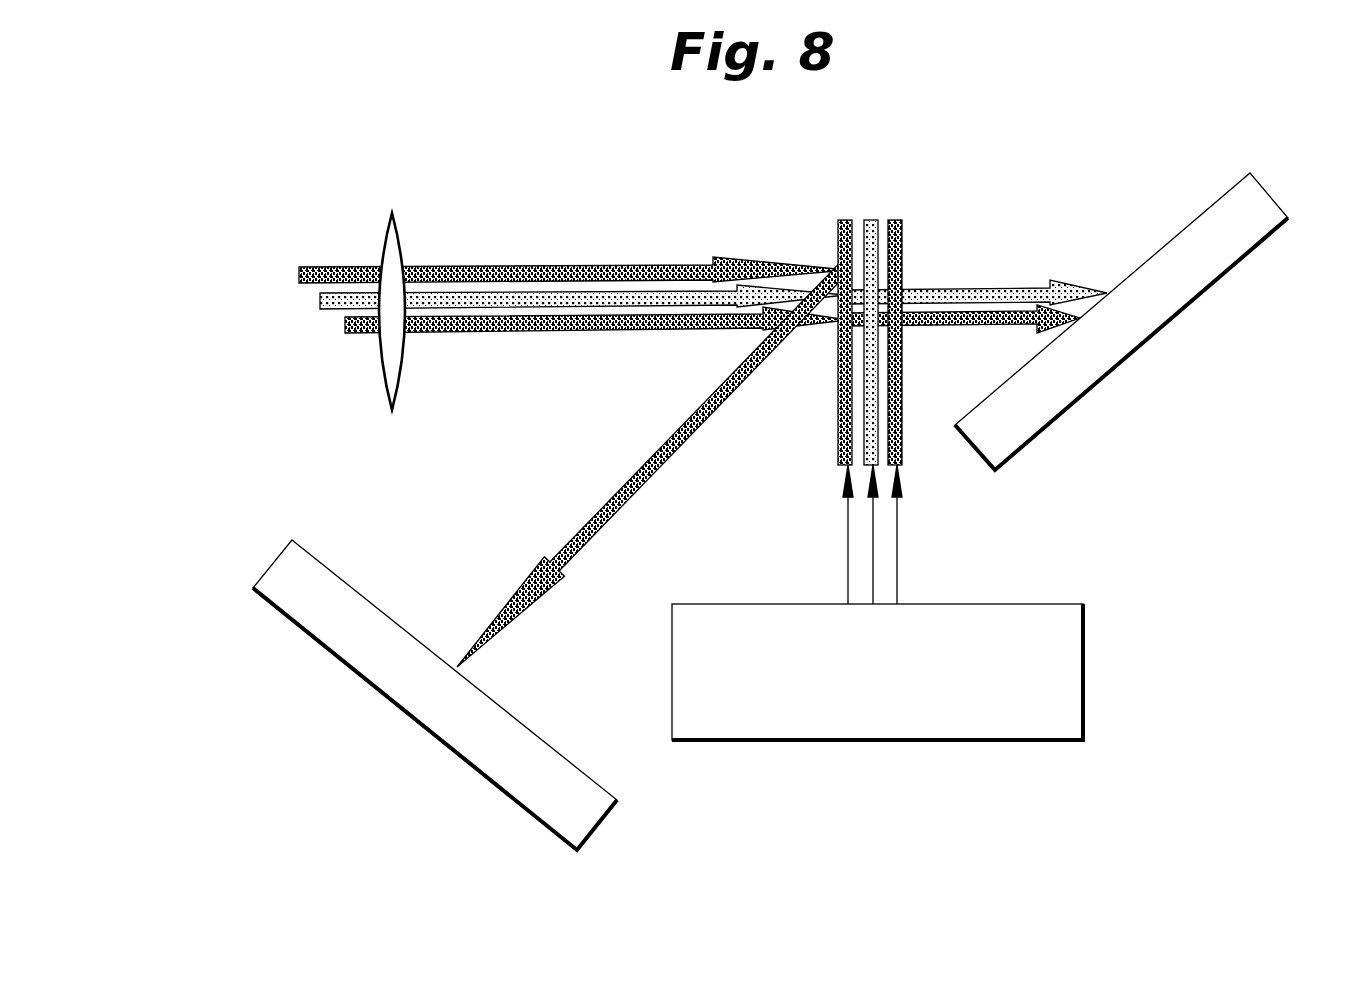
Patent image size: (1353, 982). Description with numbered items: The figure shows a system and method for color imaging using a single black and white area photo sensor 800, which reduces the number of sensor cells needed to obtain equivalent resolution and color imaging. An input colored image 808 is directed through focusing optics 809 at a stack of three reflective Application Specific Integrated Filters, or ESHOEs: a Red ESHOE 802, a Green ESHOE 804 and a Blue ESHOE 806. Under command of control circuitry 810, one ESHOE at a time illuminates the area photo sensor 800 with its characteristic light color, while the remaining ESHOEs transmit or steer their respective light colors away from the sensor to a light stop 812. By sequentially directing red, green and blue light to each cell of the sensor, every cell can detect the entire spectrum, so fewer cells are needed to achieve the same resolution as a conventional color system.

The area photo sensor 800 is at (597, 823).
The Red ESHOE 802 is at (895, 220).
The Green ESHOE 804 is at (870, 220).
The Blue ESHOE 806 is at (845, 220).
The input colored image 808 is at (290, 263).
The focusing optics 809 is at (392, 213).
The control circuitry 810 is at (1084, 665).
The light stop 812 is at (1270, 192).